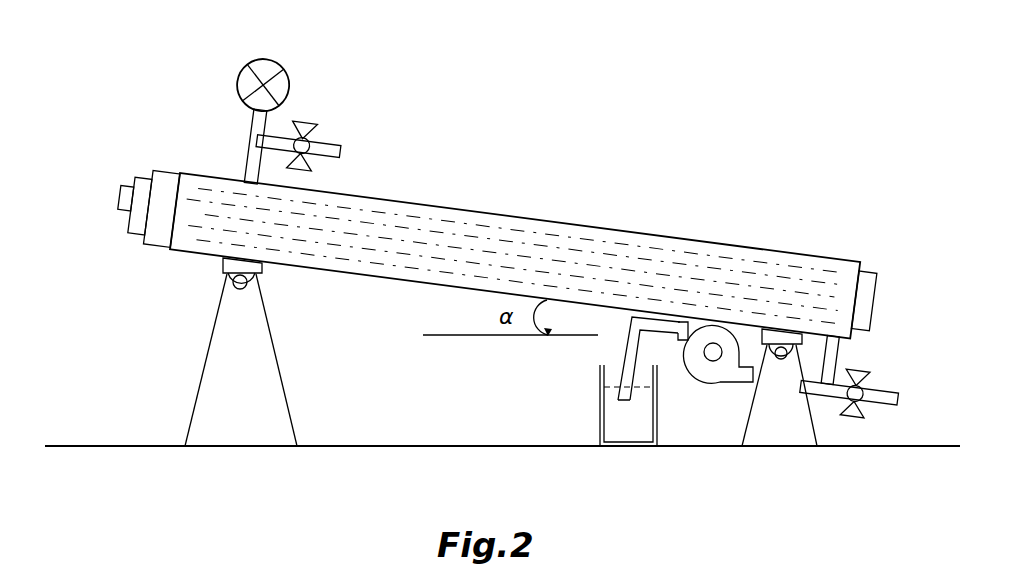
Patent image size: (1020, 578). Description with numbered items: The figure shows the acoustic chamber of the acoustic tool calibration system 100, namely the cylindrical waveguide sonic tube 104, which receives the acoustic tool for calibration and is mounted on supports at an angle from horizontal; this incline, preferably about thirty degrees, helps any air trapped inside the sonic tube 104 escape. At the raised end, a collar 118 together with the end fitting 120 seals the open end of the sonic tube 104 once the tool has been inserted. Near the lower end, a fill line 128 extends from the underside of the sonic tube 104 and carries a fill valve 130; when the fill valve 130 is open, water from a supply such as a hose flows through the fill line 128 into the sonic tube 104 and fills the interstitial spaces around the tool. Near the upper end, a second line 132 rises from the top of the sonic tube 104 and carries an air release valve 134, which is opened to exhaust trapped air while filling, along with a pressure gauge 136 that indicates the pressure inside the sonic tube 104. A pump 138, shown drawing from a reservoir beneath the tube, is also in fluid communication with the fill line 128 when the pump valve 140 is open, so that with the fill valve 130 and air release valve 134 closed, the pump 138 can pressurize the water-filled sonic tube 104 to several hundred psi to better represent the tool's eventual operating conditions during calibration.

The acoustic tool calibration system 100 is at (689, 150).
The sonic tube 104 is at (497, 222).
The collar 118 is at (163, 185).
The end fitting / cap assembly 120 is at (116, 187).
The fill line 128 is at (842, 358).
The fill valve 130 is at (867, 400).
The second line 132 is at (253, 153).
The air release valve 134 is at (305, 138).
The pressure gauge 136 is at (278, 63).
The pump 138 is at (710, 366).
The pump valve 140 is at (797, 363).